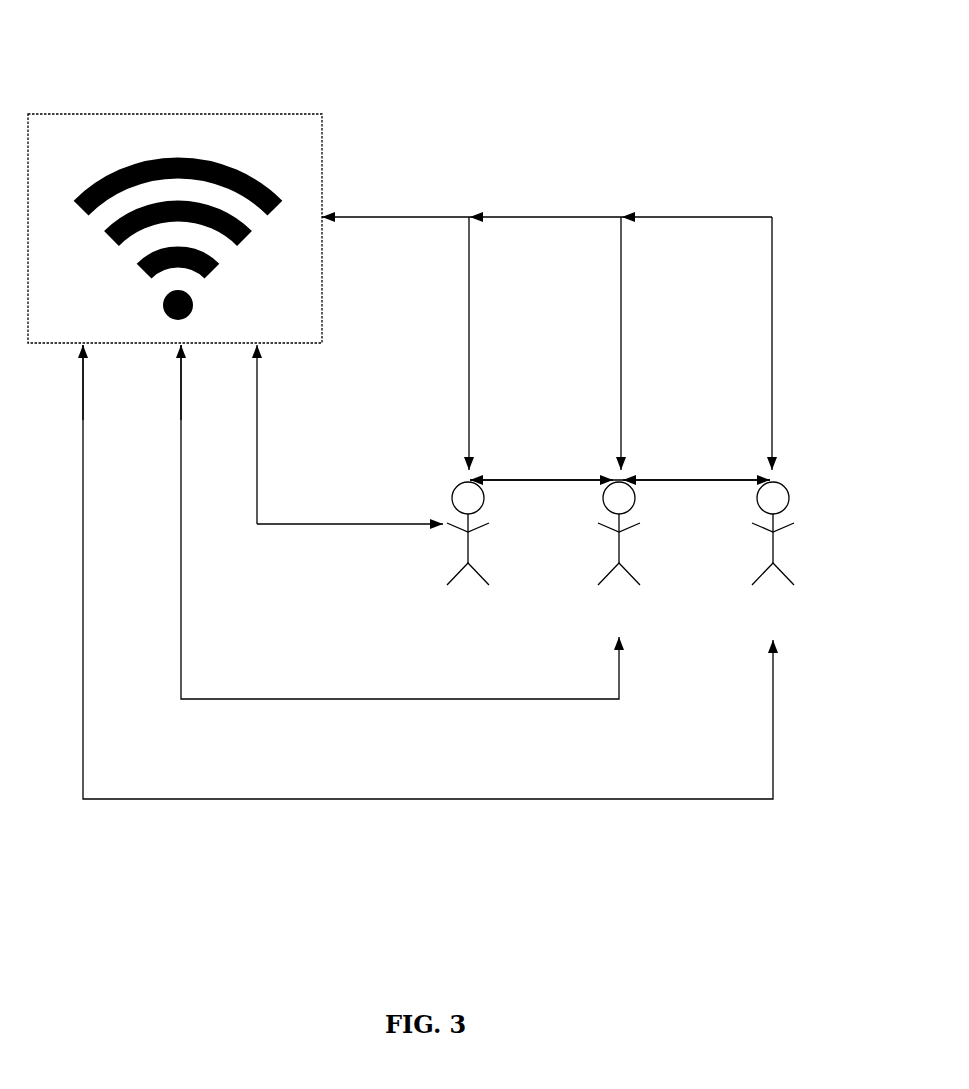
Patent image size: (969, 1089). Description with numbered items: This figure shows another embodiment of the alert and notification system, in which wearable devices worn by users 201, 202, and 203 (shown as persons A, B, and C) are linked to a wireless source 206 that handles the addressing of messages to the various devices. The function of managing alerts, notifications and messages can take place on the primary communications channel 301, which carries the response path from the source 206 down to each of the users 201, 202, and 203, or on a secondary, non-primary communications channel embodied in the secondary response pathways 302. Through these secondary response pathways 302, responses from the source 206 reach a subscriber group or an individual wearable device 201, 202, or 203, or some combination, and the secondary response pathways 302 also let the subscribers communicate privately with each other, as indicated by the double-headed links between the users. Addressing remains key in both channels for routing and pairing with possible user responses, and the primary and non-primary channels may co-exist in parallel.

The response source 206 is at (173, 107).
The primary communications channel 301 is at (738, 211).
The secondary response pathways 302 is at (549, 467).
The user wearing wearable device 201 is at (424, 557).
The user wearing wearable device 202 is at (607, 552).
The user wearing wearable device 203 is at (760, 557).